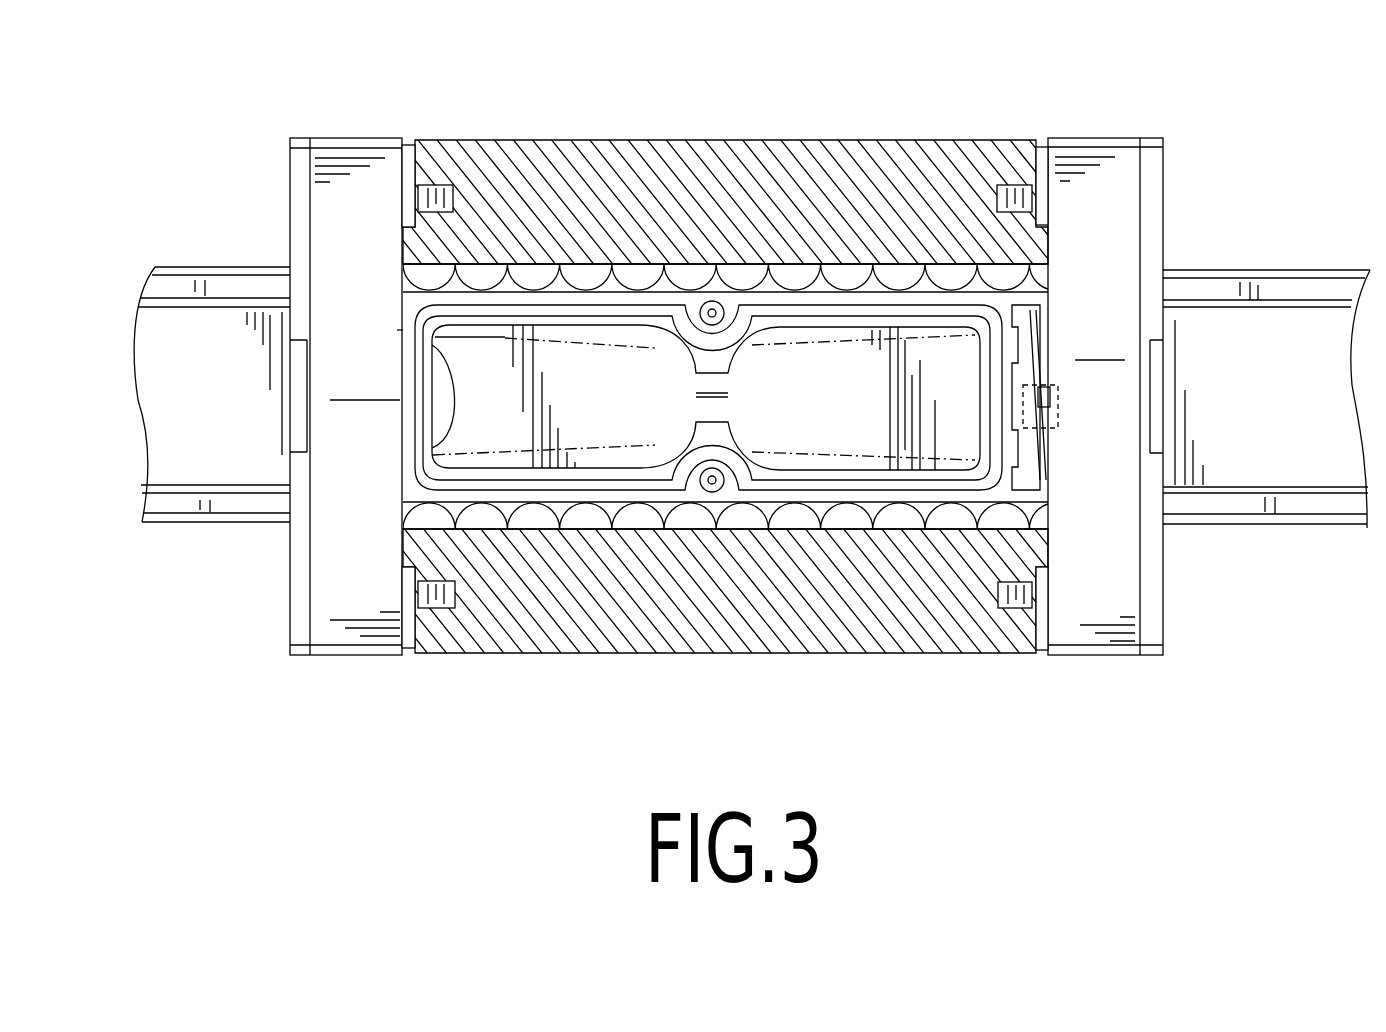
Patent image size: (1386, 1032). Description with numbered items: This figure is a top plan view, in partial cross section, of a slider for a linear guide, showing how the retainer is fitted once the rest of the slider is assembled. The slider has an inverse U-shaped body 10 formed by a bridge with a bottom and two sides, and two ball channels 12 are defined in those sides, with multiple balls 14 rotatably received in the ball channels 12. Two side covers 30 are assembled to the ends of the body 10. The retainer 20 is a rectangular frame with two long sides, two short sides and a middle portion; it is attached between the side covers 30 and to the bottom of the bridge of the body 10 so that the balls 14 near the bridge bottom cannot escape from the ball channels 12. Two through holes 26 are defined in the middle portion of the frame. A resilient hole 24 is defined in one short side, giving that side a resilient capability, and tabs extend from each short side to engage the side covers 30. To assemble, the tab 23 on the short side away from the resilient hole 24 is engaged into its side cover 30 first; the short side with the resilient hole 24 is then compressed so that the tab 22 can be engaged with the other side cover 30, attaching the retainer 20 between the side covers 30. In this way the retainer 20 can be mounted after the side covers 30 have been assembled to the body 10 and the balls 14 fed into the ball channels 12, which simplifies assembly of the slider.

The body 10 is at (767, 160).
The ball channels 12 is at (578, 277).
The balls 14 is at (848, 270).
The retainer 20 is at (612, 512).
The tab 22 is at (1052, 365).
The tab 23 is at (397, 330).
The resilient hole 24 is at (1032, 340).
The through holes 26 is at (712, 301).
The side covers 30 is at (350, 160).